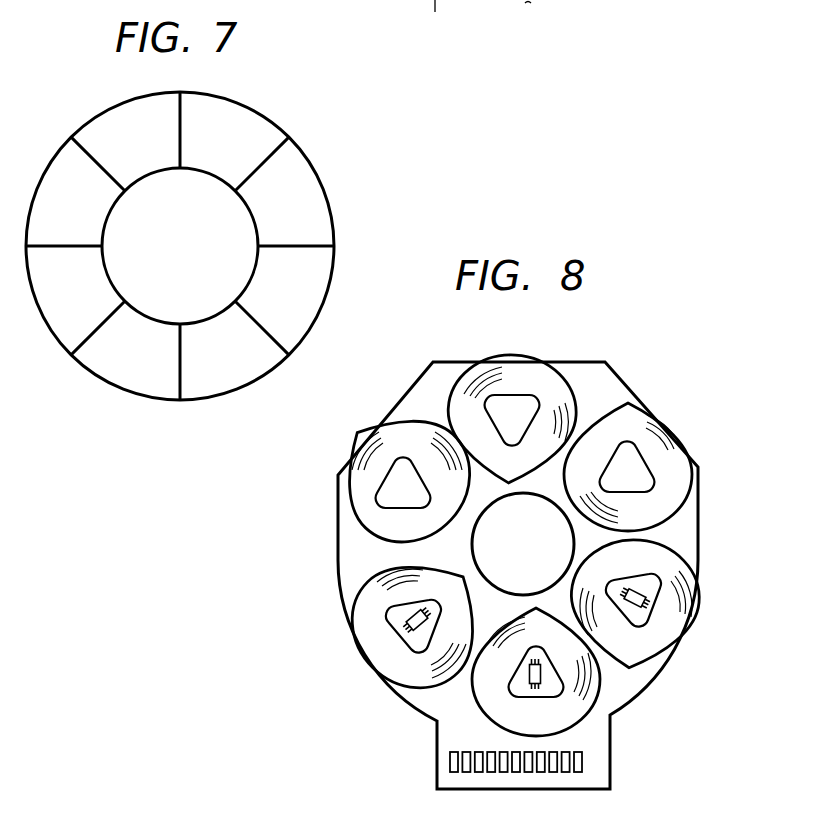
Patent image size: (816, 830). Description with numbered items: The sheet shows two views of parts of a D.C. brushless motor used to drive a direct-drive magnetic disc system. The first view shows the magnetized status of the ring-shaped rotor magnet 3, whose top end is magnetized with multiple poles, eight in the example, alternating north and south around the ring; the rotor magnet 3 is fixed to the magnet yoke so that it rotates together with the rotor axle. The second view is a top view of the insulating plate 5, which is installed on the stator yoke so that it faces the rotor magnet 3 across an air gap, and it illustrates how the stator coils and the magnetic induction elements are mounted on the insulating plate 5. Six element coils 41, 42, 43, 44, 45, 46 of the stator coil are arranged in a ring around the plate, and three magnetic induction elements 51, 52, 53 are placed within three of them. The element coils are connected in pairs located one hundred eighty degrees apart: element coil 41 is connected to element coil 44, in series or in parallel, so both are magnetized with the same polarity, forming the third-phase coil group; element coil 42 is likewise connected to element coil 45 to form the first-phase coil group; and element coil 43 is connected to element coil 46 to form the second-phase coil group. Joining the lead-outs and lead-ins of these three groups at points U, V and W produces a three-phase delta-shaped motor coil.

In FIG. 7, the rotor magnet 3 is at (310, 155).
In FIG. 8, the insulating plate 5 is at (613, 385).
In FIG. 8, the element coil 41 is at (400, 668).
In FIG. 8, the element coil 42 is at (485, 712).
In FIG. 8, the element coil 43 is at (660, 640).
In FIG. 8, the element coil 44 is at (672, 492).
In FIG. 8, the element coil 45 is at (530, 368).
In FIG. 8, the element coil 46 is at (357, 500).
In FIG. 8, the magnetic induction element 51 is at (546, 676).
In FIG. 8, the magnetic induction element 52 is at (407, 624).
In FIG. 8, the magnetic induction element 53 is at (641, 597).